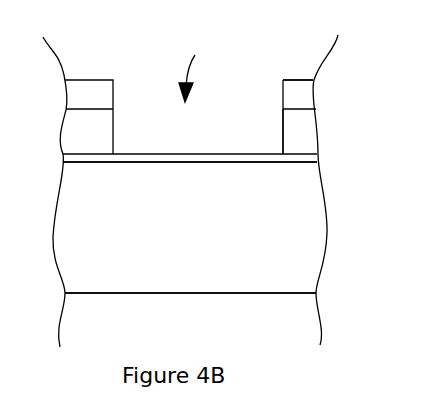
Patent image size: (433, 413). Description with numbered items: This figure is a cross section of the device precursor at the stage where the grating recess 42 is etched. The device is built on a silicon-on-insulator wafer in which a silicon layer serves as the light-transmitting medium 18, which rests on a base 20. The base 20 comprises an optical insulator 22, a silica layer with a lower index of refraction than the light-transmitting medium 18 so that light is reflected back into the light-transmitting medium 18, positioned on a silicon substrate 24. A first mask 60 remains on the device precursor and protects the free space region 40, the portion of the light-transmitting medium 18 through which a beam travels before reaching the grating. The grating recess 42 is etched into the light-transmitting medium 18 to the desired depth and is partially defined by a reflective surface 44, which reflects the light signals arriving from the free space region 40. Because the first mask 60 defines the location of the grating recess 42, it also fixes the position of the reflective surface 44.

The light-transmitting medium 18 is at (312, 143).
The base 20 is at (327, 152).
The optical insulator 22 is at (92, 153).
The substrate 24 is at (105, 265).
The free space region 40 is at (307, 120).
The grating recess 42 is at (201, 71).
The reflective surface 44 is at (283, 137).
The first mask 60 is at (104, 97).